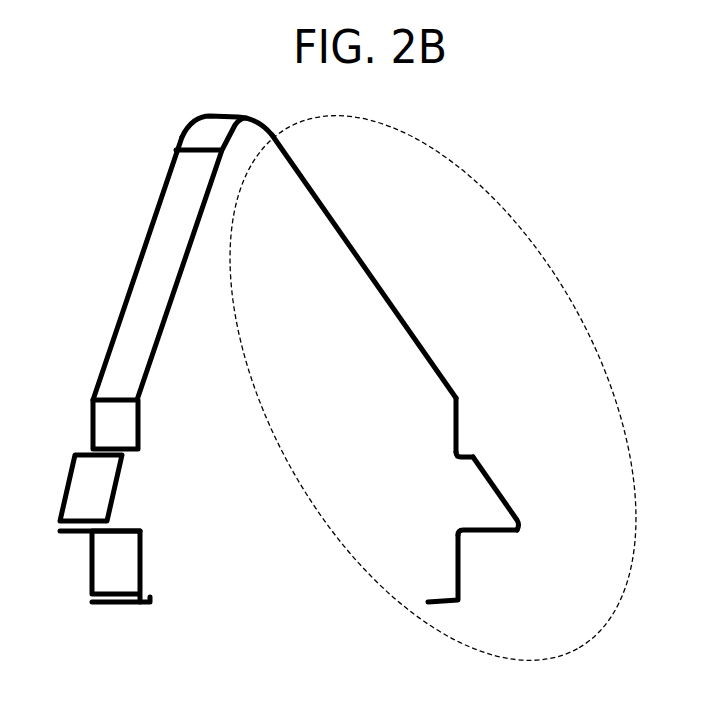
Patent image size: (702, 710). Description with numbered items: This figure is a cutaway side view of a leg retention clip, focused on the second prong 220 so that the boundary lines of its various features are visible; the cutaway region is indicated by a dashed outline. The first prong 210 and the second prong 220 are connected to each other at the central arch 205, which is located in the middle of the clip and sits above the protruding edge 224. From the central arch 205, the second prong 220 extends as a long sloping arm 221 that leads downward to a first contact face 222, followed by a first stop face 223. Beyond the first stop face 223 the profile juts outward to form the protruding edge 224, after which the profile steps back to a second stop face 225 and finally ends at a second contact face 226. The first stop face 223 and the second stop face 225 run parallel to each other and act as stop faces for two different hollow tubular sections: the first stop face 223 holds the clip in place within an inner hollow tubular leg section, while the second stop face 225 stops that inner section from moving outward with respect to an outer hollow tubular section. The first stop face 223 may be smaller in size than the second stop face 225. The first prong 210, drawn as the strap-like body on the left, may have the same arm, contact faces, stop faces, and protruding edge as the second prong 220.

The central arch 205 is at (232, 113).
The first prong 210 is at (160, 188).
The second prong 220 is at (483, 202).
The arm 221 is at (402, 302).
The first contact face 222 is at (463, 417).
The first stop face 223 is at (475, 452).
The protruding edge 224 is at (512, 490).
The second stop face 225 is at (497, 532).
The second contact face 226 is at (460, 568).